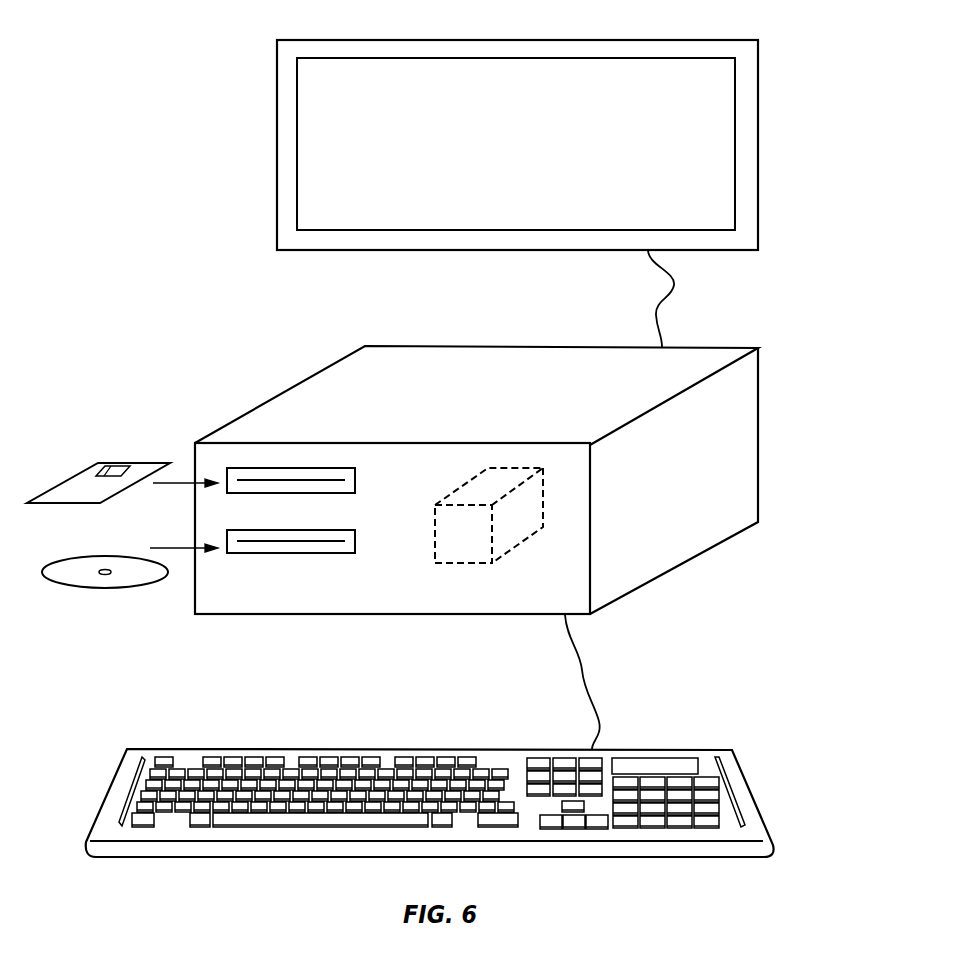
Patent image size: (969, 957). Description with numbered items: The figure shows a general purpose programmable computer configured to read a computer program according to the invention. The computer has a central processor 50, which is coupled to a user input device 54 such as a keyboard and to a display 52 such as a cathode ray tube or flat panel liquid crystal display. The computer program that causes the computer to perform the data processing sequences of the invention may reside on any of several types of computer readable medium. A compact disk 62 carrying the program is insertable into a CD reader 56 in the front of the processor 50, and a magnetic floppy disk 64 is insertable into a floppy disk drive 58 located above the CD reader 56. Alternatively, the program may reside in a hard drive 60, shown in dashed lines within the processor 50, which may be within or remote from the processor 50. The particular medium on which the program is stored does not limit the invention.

The central processor 50 is at (758, 407).
The display 52 is at (715, 40).
The user input device 54 is at (773, 810).
The CD reader 56 is at (294, 556).
The floppy disk drive 58 is at (355, 481).
The hard drive 60 is at (435, 549).
The compact disk 62 is at (77, 556).
The magnetic floppy disk 64 is at (77, 476).